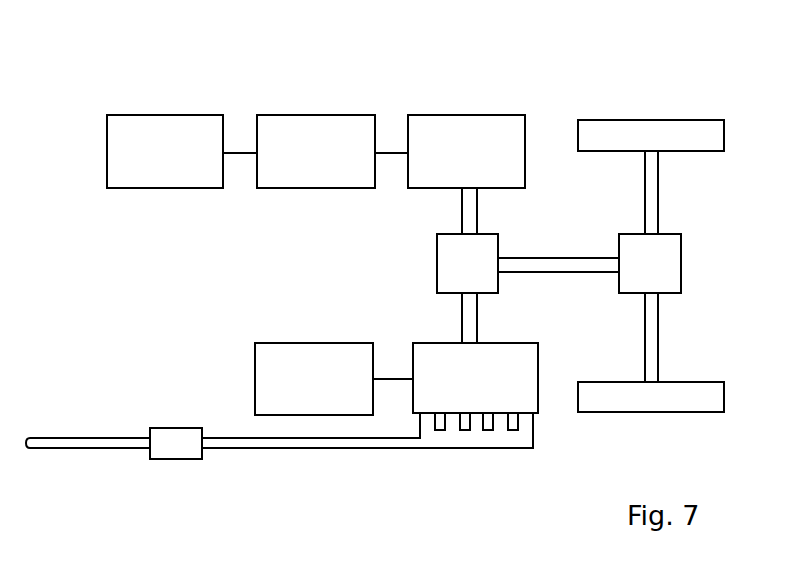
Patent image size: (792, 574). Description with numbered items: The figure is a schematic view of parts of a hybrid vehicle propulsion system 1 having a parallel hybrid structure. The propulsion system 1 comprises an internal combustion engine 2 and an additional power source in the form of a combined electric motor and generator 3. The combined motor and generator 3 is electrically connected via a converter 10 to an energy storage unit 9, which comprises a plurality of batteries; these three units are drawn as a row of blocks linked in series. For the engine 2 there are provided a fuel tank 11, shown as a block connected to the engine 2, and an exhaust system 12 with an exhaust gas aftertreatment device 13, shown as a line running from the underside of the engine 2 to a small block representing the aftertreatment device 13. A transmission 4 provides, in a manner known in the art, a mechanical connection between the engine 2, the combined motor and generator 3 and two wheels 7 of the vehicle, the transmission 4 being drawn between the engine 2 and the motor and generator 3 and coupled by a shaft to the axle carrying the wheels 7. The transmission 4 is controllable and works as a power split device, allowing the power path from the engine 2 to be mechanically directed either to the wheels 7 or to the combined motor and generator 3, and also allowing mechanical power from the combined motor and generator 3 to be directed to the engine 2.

The hybrid vehicle propulsion system 1 is at (489, 62).
The internal combustion engine 2 is at (475, 386).
The combined electric motor and generator 3 is at (466, 151).
The transmission 4 is at (467, 263).
The wheels 7 is at (703, 151).
The energy storage unit 9 is at (165, 151).
The converter 10 is at (316, 151).
The fuel tank 11 is at (314, 379).
The exhaust system 12 is at (85, 448).
The exhaust gas aftertreatment device 13 is at (183, 459).